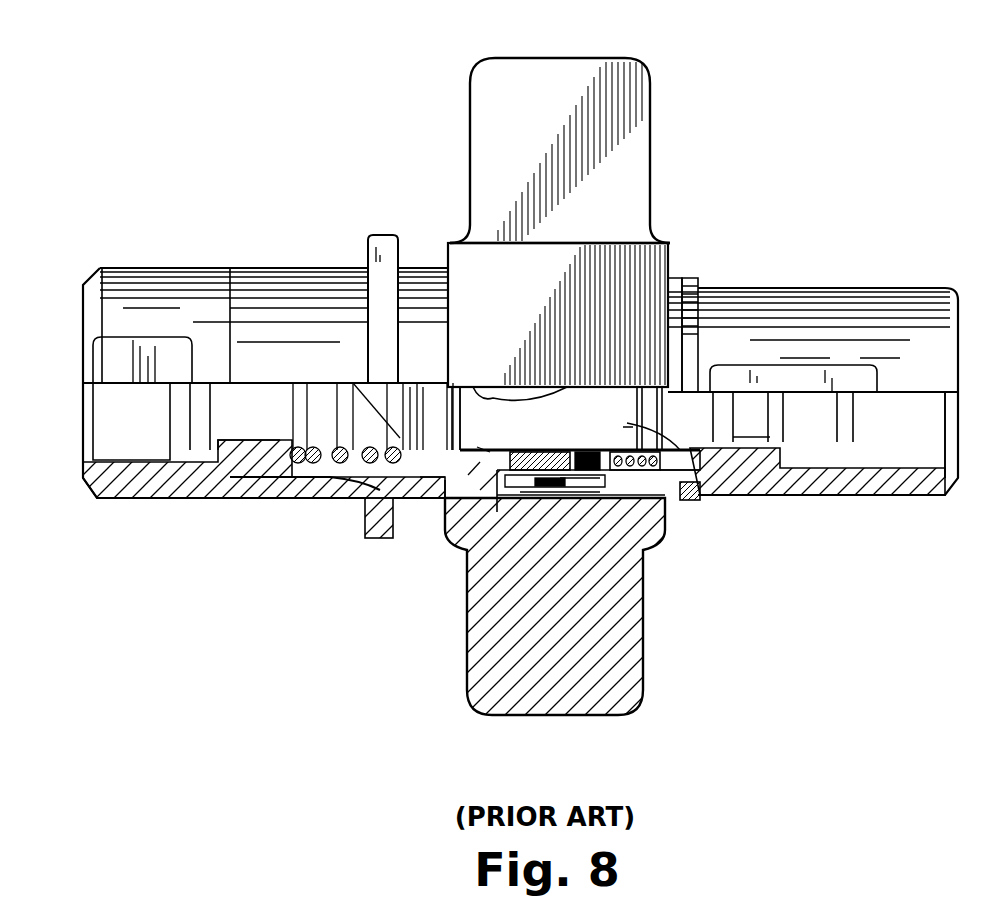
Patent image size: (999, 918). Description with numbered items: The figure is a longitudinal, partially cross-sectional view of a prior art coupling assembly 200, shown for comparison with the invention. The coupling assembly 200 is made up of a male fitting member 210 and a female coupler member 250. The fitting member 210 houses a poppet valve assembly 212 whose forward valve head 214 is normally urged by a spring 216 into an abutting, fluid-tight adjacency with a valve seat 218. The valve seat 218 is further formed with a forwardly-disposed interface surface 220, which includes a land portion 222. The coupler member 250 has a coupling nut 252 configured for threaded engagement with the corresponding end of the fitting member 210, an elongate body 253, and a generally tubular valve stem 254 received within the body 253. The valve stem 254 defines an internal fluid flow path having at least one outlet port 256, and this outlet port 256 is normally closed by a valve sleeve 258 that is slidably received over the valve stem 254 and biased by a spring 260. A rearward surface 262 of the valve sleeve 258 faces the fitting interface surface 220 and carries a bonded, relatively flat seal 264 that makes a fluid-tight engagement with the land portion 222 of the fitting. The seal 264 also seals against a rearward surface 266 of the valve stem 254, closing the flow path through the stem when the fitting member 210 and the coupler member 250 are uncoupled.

The coupling assembly 200 is at (812, 90).
The male fitting member 210 is at (203, 175).
The poppet valve assembly 212 is at (367, 505).
The forward valve head 214 is at (437, 510).
The spring 216 is at (285, 497).
The valve seat 218 is at (480, 490).
The interface surface 220 is at (543, 507).
The land portion 222 is at (530, 455).
The female coupler member 250 is at (783, 225).
The coupling nut 252 is at (652, 80).
The elongate body 253 is at (792, 497).
The valve stem 254 is at (700, 497).
The outlet port 256 is at (567, 390).
The valve sleeve 258 is at (587, 513).
The spring 260 is at (667, 480).
The rearward surface 262 is at (497, 507).
The seal 264 is at (468, 475).
The rearward surface 266 is at (477, 447).